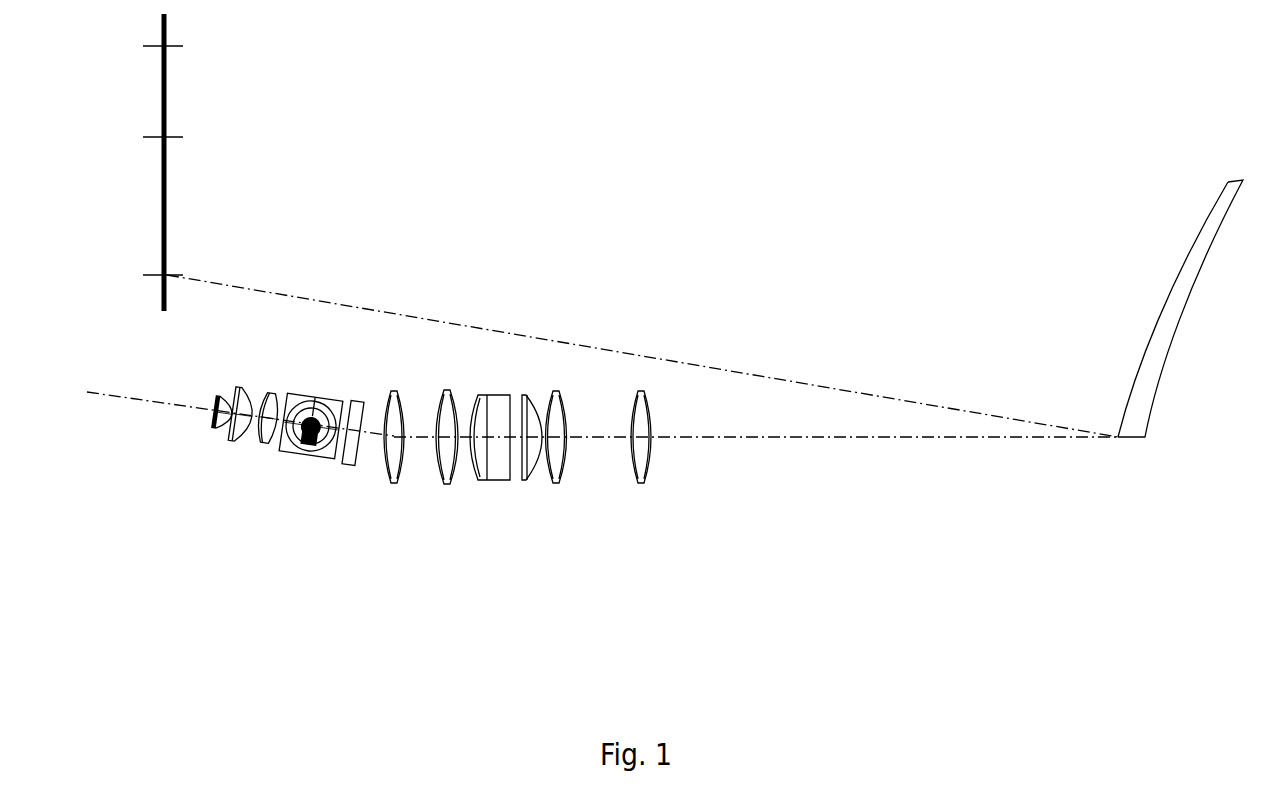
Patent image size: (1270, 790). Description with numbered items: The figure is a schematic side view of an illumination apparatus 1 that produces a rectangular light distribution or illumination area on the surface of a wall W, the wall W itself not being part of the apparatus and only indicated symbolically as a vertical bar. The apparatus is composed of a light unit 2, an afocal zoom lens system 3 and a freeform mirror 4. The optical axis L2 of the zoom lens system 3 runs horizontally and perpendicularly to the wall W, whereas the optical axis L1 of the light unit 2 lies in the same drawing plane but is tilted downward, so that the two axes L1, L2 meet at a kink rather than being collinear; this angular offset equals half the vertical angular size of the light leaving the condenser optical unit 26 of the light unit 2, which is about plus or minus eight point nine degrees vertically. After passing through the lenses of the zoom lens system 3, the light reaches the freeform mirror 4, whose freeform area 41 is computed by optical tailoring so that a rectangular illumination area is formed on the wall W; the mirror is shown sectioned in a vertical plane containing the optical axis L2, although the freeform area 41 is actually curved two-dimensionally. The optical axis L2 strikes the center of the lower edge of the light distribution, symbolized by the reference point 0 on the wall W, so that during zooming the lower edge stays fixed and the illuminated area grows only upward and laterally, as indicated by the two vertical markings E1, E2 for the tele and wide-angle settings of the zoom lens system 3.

The illumination apparatus 1 is at (642, 168).
The light unit 2 is at (298, 383).
The afocal zoom lens system 3 is at (610, 592).
The freeform mirror 4 is at (1172, 370).
The freeform area 41 is at (1180, 263).
The condenser optical unit 26 is at (357, 402).
The wall W is at (165, 97).
The optical axis of the light unit L1 is at (158, 405).
The optical axis of the zoom lens system L2 is at (804, 438).
The vertical marking E1 is at (147, 140).
The vertical marking E2 is at (147, 51).
The reference point 0 is at (155, 275).